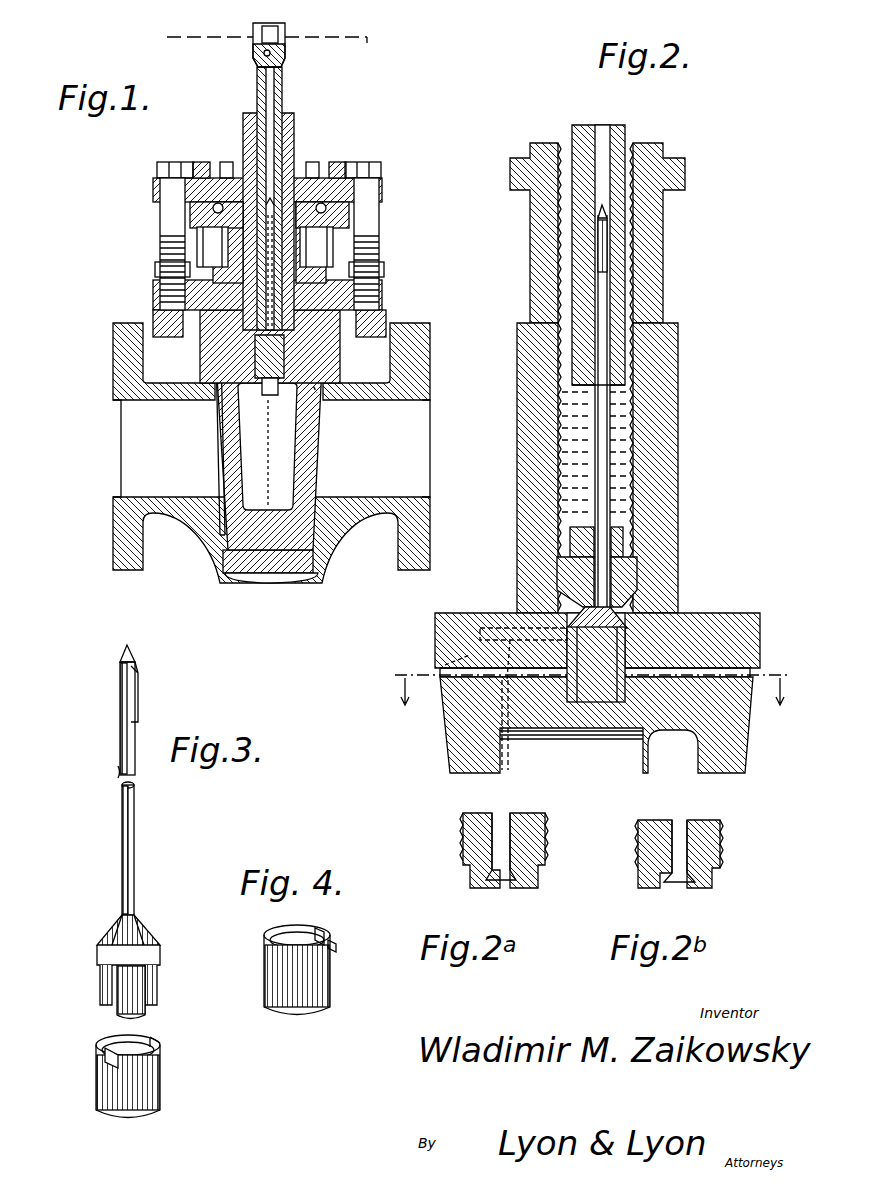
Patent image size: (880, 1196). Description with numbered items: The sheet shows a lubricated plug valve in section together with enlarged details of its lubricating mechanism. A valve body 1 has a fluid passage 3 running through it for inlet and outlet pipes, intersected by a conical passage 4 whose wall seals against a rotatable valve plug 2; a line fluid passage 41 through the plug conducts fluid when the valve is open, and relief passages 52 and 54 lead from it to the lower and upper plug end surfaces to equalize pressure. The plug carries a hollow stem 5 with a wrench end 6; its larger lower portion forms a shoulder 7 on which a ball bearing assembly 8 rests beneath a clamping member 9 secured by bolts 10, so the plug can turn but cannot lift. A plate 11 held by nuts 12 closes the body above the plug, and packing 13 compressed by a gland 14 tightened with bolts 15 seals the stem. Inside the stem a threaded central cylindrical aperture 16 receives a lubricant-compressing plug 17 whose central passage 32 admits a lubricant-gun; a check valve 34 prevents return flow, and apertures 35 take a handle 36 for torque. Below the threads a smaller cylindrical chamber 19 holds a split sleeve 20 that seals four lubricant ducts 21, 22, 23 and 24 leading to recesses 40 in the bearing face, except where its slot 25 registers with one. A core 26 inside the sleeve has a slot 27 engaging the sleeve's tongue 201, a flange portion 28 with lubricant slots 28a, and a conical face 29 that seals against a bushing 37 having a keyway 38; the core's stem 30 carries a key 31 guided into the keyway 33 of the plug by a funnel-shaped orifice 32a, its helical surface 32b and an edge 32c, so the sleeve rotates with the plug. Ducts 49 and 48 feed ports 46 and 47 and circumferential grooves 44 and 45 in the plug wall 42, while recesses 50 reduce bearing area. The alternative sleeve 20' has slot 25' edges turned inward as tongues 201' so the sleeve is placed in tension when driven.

In FIG. 1, the valve body 1 is at (196, 526).
In FIG. 1, the valve plug 2 is at (323, 474).
In FIG. 2, the valve plug 2 is at (434, 755).
In FIG. 1, the fluid passage 3 is at (115, 431).
In FIG. 1, the conical passage 4 is at (215, 395).
In FIG. 1, the hollow stem 5 is at (300, 252).
In FIG. 2, the hollow stem 5 is at (668, 453).
In FIG. 1, the square or hexagonal end 6 is at (295, 126).
In FIG. 2, the square or hexagonal end 6 is at (668, 151).
In FIG. 1, the shoulder 7 is at (306, 241).
In FIG. 2, the shoulder 7 is at (680, 329).
In FIG. 1, the ball bearing assembly 8 is at (200, 216).
In FIG. 1, the clamping member 9 is at (383, 190).
In FIG. 1, the bolts 10 is at (165, 165).
In FIG. 1, the plate 11 is at (384, 292).
In FIG. 1, the nuts 12 is at (156, 268).
In FIG. 1, the packing 13 is at (240, 335).
In FIG. 1, the gland 14 is at (197, 247).
In FIG. 1, the bolts 15 is at (380, 262).
In FIG. 1, the central cylindrical aperture 16 is at (166, 300).
In FIG. 2, the central cylindrical aperture 16 is at (631, 421).
In FIG. 1, the lubricant-compressing plug 17 is at (283, 79).
In FIG. 2, the lubricant-compressing plug 17 is at (626, 296).
In FIG. 2A, the lubricant-compressing plug 17 is at (525, 851).
In FIG. 2B, the lubricant-compressing plug 17 is at (711, 849).
In FIG. 1, the cylindrical chamber 19 is at (285, 362).
In FIG. 2, the cylindrical chamber 19 is at (631, 631).
In FIG. 1, the split sleeve 20 is at (254, 401).
In FIG. 2, the split sleeve 20 is at (571, 751).
In FIG. 3, the split sleeve 20 is at (150, 1076).
In FIG. 2, the lubricant duct 21 is at (741, 649).
In FIG. 1, the lubricant duct 22 is at (321, 405).
In FIG. 2, the lubricant duct 23 is at (480, 640).
In FIG. 1, the lubricant duct 24 is at (220, 426).
In FIG. 1, the slot 25 is at (258, 426).
In FIG. 2, the slot 25 is at (623, 693).
In FIG. 3, the slot 25 is at (170, 1033).
In FIG. 1, the core 26 is at (266, 400).
In FIG. 2, the core 26 is at (606, 704).
In FIG. 3, the core 26 is at (147, 995).
In FIG. 2, the slot 27 is at (591, 704).
In FIG. 3, the slot 27 is at (101, 981).
In FIG. 3, the flange portion 28 is at (141, 966).
In FIG. 2, the slots 28a is at (630, 636).
In FIG. 3, the slots 28a is at (100, 931).
In FIG. 2, the conical face 29 is at (600, 621).
In FIG. 3, the conical face 29 is at (136, 936).
In FIG. 1, the stem 30 is at (268, 246).
In FIG. 2, the stem 30 is at (606, 491).
In FIG. 3, the stem 30 is at (134, 835).
In FIG. 1, the key 31 is at (276, 212).
In FIG. 2, the key 31 is at (612, 241).
In FIG. 3, the key 31 is at (136, 692).
In FIG. 1, the central passage 32 is at (262, 94).
In FIG. 2, the central passage 32 is at (578, 131).
In FIG. 2A, the central passage 32 is at (492, 858).
In FIG. 2B, the central passage 32 is at (672, 856).
In FIG. 2, the funnel-shaped orifice 32a is at (630, 391).
In FIG. 2, the helical surface 32b is at (566, 386).
In FIG. 2A, the helical surface 32b is at (501, 886).
In FIG. 2B, the helical surface 32b is at (700, 876).
In FIG. 2B, the edge of keyway 32c is at (670, 889).
In FIG. 1, the keyway 33 is at (276, 106).
In FIG. 2, the keyway 33 is at (612, 136).
In FIG. 2A, the keyway 33 is at (476, 842).
In FIG. 2B, the keyway 33 is at (700, 829).
In FIG. 1, the check valve 34 is at (258, 53).
In FIG. 1, the apertures 35 is at (255, 40).
In FIG. 1, the handle 36 is at (357, 43).
In FIG. 1, the bushing 37 is at (378, 330).
In FIG. 2, the bushing 37 is at (566, 571).
In FIG. 1, the keyway 38 is at (392, 304).
In FIG. 2, the keyway 38 is at (612, 536).
In FIG. 2, the recesses 40 is at (440, 669).
In FIG. 1, the line fluid passage 41 is at (292, 442).
In FIG. 2, the line fluid passage 41 is at (691, 771).
In FIG. 1, the wall 42 is at (206, 393).
In FIG. 1, the upper circumferential groove 44 is at (296, 345).
In FIG. 1, the lower circumferential groove 45 is at (320, 541).
In FIG. 1, the port 46 is at (250, 352).
In FIG. 2, the port 46 is at (485, 628).
In FIG. 1, the port 47 is at (228, 578).
In FIG. 1, the duct 48 is at (217, 466).
In FIG. 2, the duct 48 is at (505, 780).
In FIG. 1, the duct 49 is at (220, 396).
In FIG. 2, the duct 49 is at (470, 706).
In FIG. 1, the recesses 50 is at (321, 491).
In FIG. 1, the relief passage 52 is at (268, 452).
In FIG. 1, the relief passage 54 is at (296, 386).
In FIG. 2, the tongue 201 is at (524, 626).
In FIG. 3, the tongue 201 is at (87, 1073).
In FIG. 4, the alternative sleeve 20' is at (297, 990).
In FIG. 4, the slot 25' is at (343, 932).
In FIG. 4, the tongues 201' is at (343, 932).